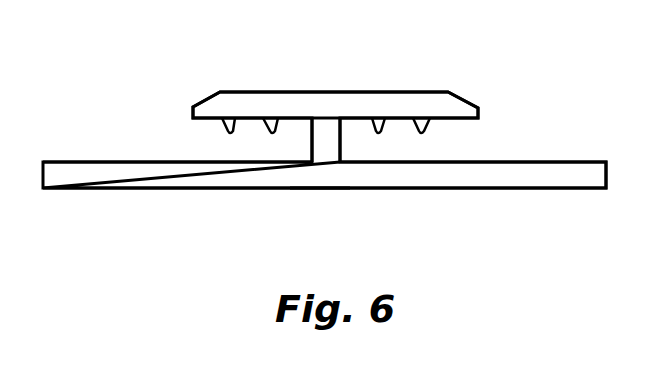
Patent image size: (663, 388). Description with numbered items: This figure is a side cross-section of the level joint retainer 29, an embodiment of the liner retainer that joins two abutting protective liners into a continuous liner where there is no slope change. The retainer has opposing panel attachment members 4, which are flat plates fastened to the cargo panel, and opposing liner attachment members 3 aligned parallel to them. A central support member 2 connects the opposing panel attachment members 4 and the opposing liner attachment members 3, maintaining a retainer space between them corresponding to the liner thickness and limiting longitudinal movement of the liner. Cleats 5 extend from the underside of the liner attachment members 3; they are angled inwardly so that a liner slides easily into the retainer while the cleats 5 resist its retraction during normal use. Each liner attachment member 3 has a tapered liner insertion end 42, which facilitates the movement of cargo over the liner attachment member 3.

The tapered liner insertion end 42 is at (463, 96).
The liner attachment member 3 is at (255, 100).
The cleats 5 is at (227, 127).
The support member 2 is at (320, 140).
The panel attachment member 4 is at (97, 175).
The level joint retainer 29 is at (290, 180).